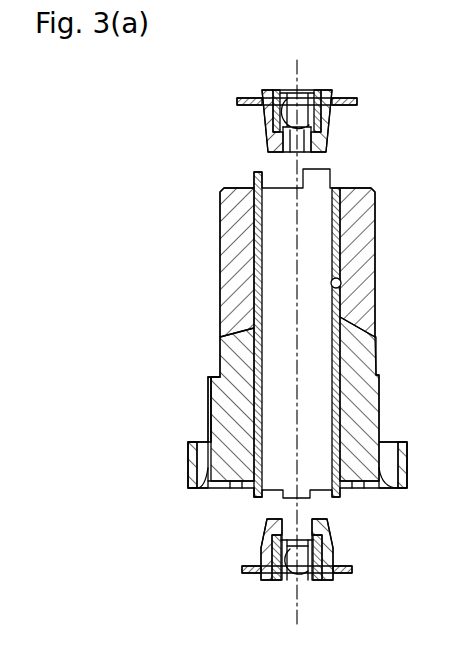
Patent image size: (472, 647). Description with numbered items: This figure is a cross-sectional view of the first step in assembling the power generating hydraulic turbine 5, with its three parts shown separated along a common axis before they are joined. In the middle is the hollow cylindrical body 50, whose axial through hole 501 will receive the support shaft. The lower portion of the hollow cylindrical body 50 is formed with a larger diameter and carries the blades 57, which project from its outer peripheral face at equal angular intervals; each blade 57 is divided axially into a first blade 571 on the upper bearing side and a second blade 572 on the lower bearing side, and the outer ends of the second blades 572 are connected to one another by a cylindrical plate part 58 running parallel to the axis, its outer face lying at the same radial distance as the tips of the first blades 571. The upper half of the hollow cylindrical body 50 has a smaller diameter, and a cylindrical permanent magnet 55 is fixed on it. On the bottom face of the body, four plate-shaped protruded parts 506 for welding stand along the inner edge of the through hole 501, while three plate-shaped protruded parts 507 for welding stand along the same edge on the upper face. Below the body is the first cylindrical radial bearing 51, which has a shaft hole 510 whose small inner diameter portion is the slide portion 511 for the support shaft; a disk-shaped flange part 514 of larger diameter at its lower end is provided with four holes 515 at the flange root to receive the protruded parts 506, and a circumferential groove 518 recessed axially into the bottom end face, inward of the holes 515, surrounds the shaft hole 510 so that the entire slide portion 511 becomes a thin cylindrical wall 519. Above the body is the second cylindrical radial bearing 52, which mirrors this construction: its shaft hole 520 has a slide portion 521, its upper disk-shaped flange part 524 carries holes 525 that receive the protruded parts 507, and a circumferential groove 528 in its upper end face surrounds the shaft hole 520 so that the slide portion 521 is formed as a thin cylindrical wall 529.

The power generating hydraulic turbine 5 is at (384, 211).
The hollow cylindrical body 50 is at (220, 347).
The cylindrical permanent magnet 55 is at (220, 246).
The through hole 501 is at (336, 284).
The protruded parts for welding 506 is at (262, 497).
The protruded parts for welding 507 is at (258, 172).
The blades 57 is at (107, 355).
The first blade 571 is at (208, 393).
The second blade 572 is at (203, 447).
The cylindrical plate part 58 is at (188, 477).
The second cylindrical radial bearing 52 is at (345, 90).
The shaft hole 520 is at (336, 110).
The slide portion 521 is at (329, 151).
The disk-shaped flange part 524 is at (264, 100).
The holes 525 is at (263, 90).
The circumferential groove 528 is at (322, 90).
The thin cylindrical wall 529 is at (316, 93).
The first cylindrical radial bearing 51 is at (255, 585).
The shaft hole 510 is at (303, 552).
The slide portion 511 is at (280, 580).
The disk-shaped flange part 514 is at (352, 570).
The holes 515 is at (343, 575).
The circumferential groove 518 is at (320, 578).
The thin cylindrical wall 519 is at (303, 582).